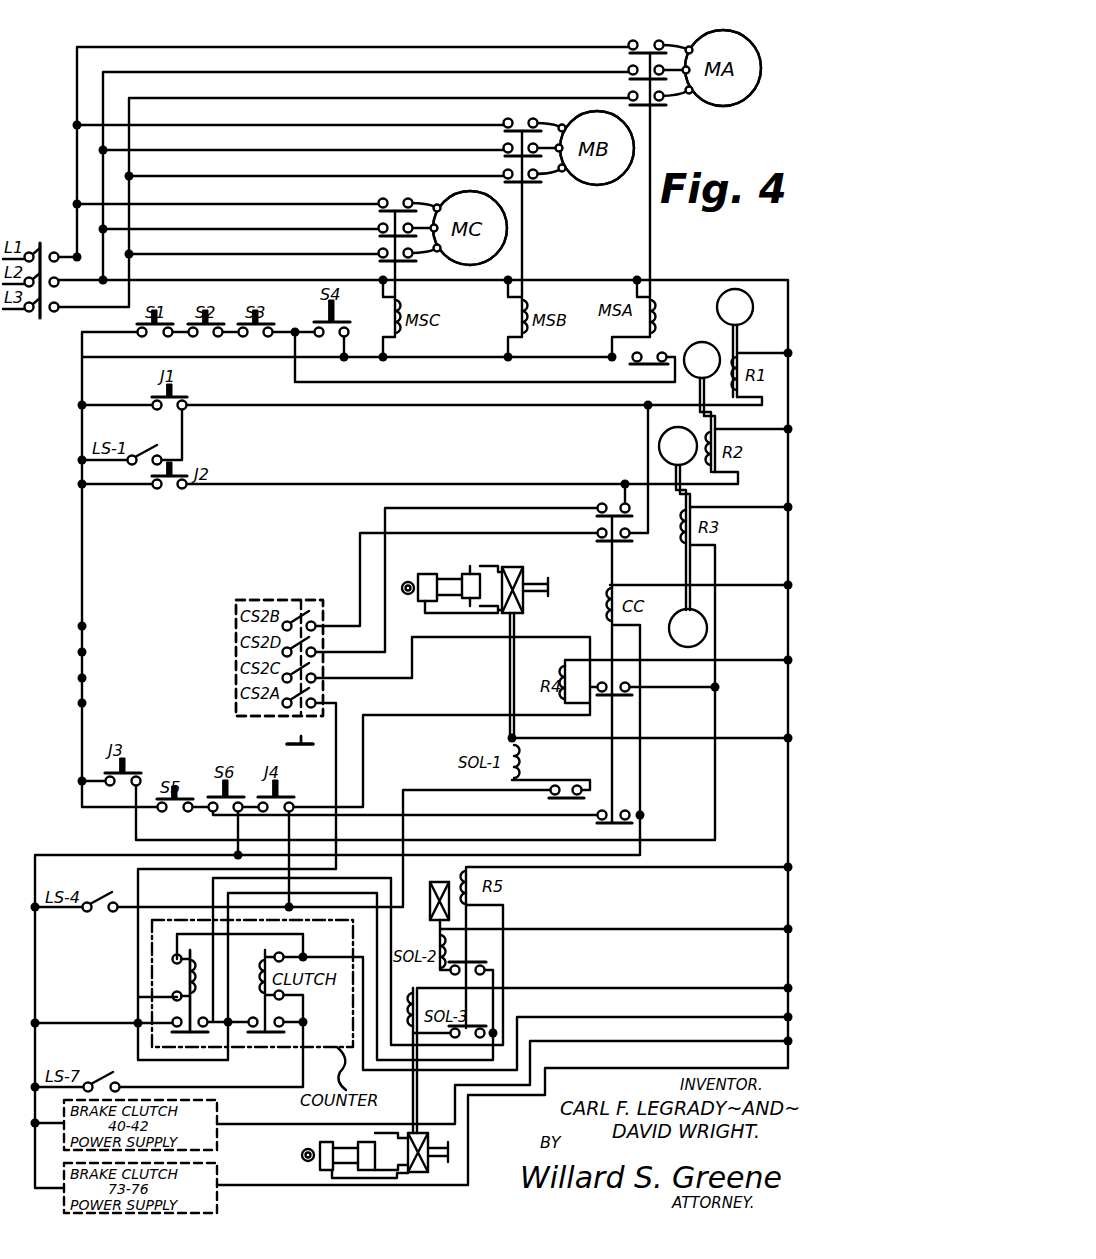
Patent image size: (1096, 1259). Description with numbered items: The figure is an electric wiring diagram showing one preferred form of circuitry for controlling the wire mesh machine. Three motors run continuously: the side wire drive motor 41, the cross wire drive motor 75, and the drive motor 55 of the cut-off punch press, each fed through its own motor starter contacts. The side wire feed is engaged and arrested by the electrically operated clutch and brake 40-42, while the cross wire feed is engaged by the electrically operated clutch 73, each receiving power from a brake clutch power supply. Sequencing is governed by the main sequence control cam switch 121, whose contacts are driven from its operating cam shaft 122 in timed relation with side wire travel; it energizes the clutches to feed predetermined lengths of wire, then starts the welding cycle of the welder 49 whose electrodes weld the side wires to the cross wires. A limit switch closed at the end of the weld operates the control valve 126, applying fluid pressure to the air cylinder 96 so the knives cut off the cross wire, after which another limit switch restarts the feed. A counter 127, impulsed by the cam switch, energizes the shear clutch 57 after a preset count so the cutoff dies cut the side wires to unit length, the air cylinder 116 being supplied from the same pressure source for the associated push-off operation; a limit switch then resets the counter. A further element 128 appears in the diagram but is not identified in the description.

The drive motor 41 is at (723, 106).
The motor 75 is at (597, 185).
The drive motor 55 is at (507, 232).
The clutch and brake 40-42 is at (735, 289).
The electrically operated clutch 73 is at (700, 342).
The welding unit electrodes 49 is at (659, 447).
The main sequence control cam switch 121 is at (288, 600).
The operating cam shaft 122 is at (300, 735).
The air cylinder 96 is at (445, 575).
The control valve 126 is at (525, 574).
The clutch 128 is at (707, 628).
The shear clutch 57 is at (428, 897).
The counter 127 is at (150, 1012).
The air cylinder 116 is at (338, 1142).